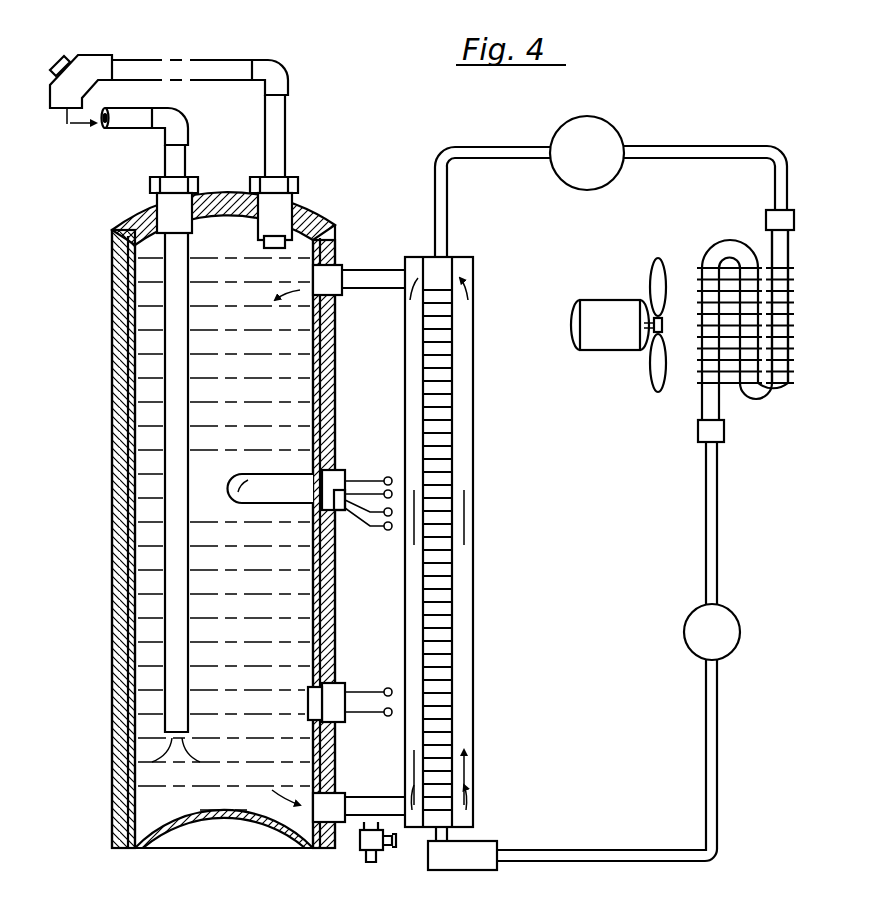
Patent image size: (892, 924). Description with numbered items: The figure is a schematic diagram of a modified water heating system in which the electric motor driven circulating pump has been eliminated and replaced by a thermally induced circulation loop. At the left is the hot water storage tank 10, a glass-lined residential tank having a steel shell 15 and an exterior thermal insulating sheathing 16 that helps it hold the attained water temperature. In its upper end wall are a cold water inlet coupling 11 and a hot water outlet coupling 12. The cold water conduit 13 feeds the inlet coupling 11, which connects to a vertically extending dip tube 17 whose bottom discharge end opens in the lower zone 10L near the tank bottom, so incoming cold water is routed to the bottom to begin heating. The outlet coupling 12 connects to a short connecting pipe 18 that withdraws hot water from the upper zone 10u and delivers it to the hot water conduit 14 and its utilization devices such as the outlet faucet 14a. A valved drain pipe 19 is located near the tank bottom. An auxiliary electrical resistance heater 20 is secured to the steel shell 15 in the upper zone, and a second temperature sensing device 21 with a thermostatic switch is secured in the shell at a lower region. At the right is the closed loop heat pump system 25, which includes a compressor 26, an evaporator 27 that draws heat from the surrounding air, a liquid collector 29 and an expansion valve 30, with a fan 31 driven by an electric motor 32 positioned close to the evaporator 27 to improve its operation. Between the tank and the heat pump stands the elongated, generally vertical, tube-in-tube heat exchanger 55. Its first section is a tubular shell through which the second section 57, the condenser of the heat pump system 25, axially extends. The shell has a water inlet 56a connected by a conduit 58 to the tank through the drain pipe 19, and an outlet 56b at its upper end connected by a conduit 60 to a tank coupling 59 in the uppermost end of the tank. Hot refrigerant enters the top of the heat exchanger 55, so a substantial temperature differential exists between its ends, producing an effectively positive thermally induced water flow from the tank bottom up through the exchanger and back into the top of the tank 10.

The hot water storage tank 10 is at (108, 410).
The upper zone 10u is at (140, 314).
The lower zone 10L is at (150, 787).
The cold water inlet coupling 11 is at (168, 202).
The hot water outlet coupling 12 is at (292, 206).
The cold water conduit 13 is at (132, 128).
The hot water conduit 14 is at (235, 60).
The outlet faucet 14a is at (100, 55).
The steel shell 15 is at (128, 522).
The thermal insulating sheathing 16 is at (128, 579).
The dip tube 17 is at (180, 450).
The connecting pipe 18 is at (264, 242).
The valved drain pipe 19 is at (384, 850).
The electrical resistance heater 20 is at (284, 498).
The second temperature sensing device 21 is at (310, 701).
The heat pump system 25 is at (690, 143).
The compressor 26 is at (613, 128).
The evaporator 27 is at (757, 407).
The liquid collector 29 is at (488, 856).
The expansion valve 30 is at (738, 615).
The fan 31 is at (652, 276).
The electric motor 32 is at (612, 346).
The heat exchanger 55 is at (480, 414).
The water inlet 56a is at (410, 800).
The outlet 56b is at (416, 280).
The second section 57 is at (444, 567).
The conduit 58 is at (372, 798).
The tank coupling 59 is at (334, 297).
The conduit 60 is at (368, 272).